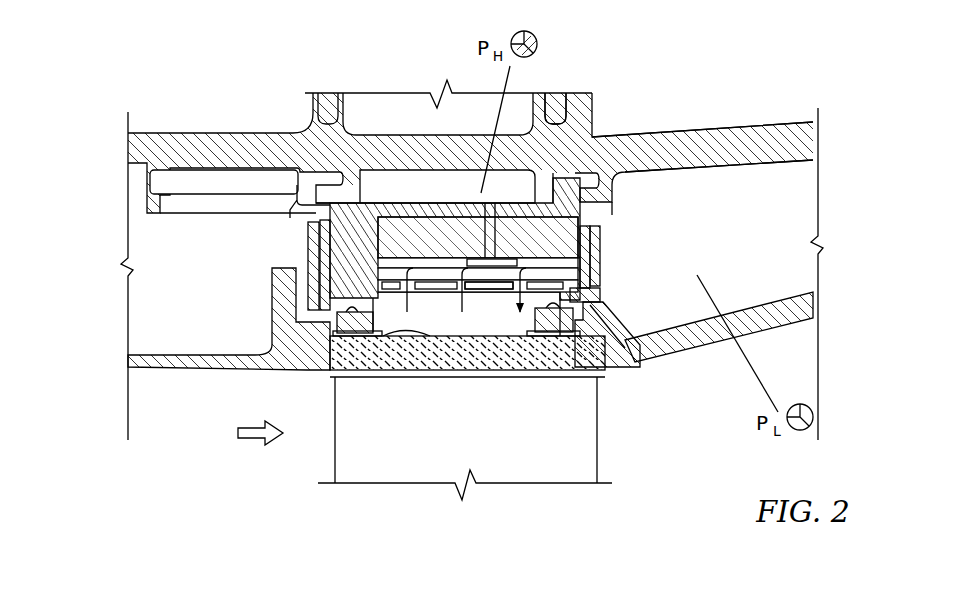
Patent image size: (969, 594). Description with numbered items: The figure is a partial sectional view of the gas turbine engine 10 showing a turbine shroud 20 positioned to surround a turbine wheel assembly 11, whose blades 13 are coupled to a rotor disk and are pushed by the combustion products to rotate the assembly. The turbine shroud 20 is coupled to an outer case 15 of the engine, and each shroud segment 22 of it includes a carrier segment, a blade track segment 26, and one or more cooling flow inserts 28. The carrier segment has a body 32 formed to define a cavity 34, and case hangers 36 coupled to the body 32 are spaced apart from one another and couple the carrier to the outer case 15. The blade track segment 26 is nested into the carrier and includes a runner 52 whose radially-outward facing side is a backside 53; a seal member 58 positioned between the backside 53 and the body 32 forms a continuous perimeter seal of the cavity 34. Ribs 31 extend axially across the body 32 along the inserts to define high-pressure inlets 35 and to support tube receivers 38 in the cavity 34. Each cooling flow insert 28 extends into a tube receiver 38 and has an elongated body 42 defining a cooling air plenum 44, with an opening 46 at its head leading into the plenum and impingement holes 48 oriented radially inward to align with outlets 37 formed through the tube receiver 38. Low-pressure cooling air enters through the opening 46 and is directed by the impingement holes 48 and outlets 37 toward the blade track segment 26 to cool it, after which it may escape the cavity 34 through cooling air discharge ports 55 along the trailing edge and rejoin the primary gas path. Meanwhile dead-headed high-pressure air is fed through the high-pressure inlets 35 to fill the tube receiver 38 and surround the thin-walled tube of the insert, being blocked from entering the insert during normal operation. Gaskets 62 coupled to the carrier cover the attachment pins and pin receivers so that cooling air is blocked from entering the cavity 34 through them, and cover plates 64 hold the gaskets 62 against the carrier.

The gas turbine engine 10 is at (763, 56).
The turbine wheel assembly 11 is at (635, 463).
The blades 13 is at (578, 456).
The outer case 15 is at (642, 120).
The turbine shroud 20 is at (640, 250).
The shroud segment 22 is at (618, 278).
The blade track segment 26 is at (330, 345).
The cooling flow inserts 28 is at (460, 270).
The ribs 31 is at (393, 245).
The body 32 is at (368, 242).
The cavity 34 is at (418, 331).
The high-pressure inlets 35 is at (486, 236).
The case hangers 36 is at (305, 160).
The outlets 37 is at (478, 290).
The tube receiver 38 is at (586, 178).
The elongated body 42 is at (503, 254).
The cooling air plenum 44 is at (617, 357).
The opening 46 is at (603, 304).
The impingement holes 48 is at (460, 248).
The runner 52 is at (330, 368).
The backside 53 is at (425, 337).
The cooling air discharge ports 55 is at (640, 338).
The seal member 58 is at (585, 363).
The gaskets 62 is at (312, 246).
The cover plates 64 is at (314, 263).